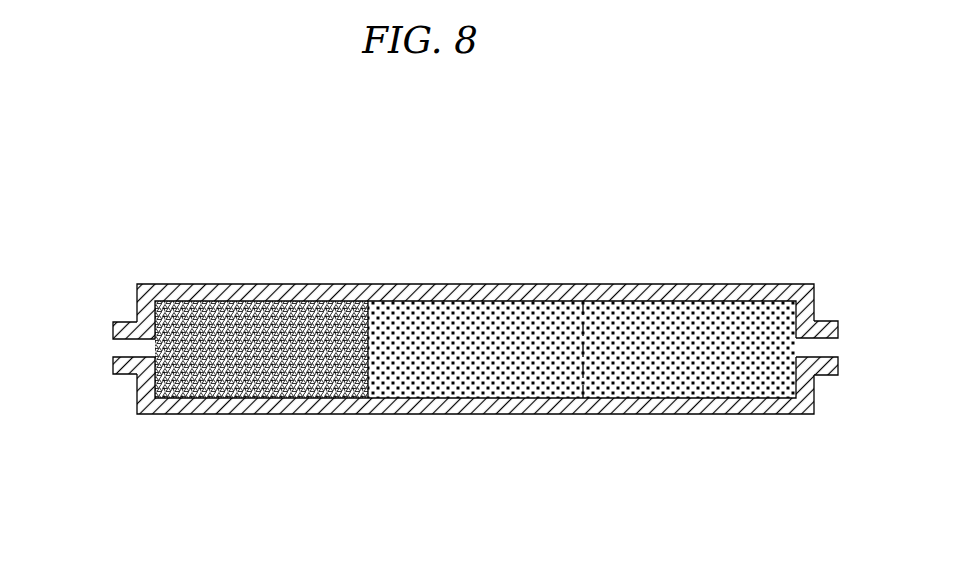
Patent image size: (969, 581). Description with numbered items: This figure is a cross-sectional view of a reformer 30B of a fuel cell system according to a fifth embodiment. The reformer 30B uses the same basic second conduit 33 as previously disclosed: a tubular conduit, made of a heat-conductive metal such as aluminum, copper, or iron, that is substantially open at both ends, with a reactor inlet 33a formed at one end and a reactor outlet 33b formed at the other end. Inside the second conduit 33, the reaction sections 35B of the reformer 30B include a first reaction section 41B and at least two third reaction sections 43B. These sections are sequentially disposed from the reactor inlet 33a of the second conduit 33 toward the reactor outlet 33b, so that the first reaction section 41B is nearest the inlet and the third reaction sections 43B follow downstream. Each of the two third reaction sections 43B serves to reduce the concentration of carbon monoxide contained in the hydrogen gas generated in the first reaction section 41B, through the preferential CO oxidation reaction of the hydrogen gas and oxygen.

The reformer 30B is at (804, 232).
The second conduit 33 is at (400, 402).
The reactor inlet 33a is at (113, 346).
The reactor outlet 33b is at (838, 345).
The reaction sections 35B is at (252, 232).
The first reaction section 41B is at (261, 300).
The third reaction section 43B is at (477, 300).